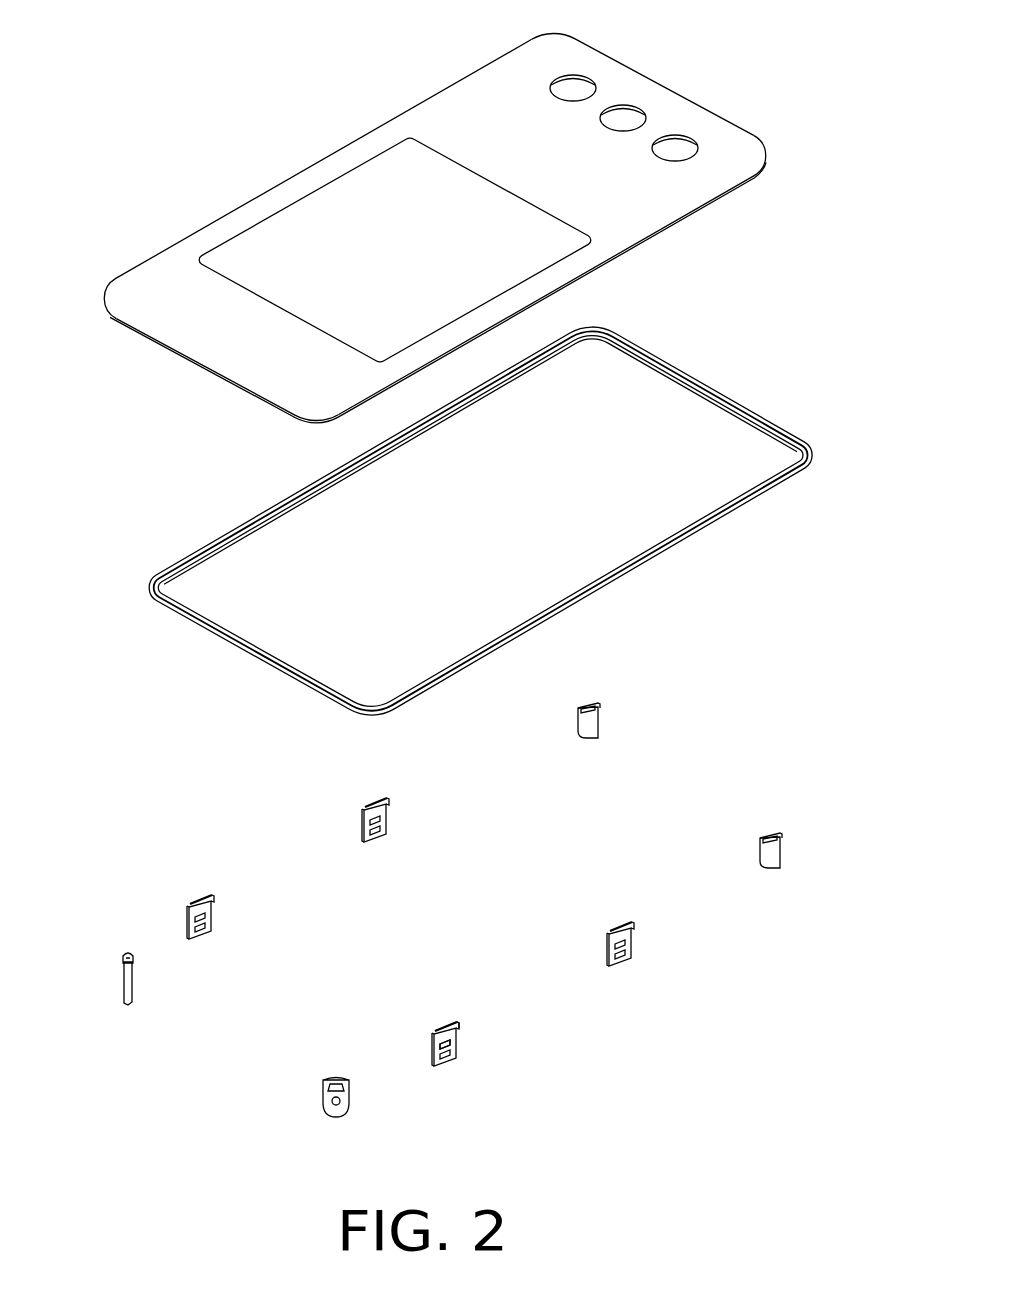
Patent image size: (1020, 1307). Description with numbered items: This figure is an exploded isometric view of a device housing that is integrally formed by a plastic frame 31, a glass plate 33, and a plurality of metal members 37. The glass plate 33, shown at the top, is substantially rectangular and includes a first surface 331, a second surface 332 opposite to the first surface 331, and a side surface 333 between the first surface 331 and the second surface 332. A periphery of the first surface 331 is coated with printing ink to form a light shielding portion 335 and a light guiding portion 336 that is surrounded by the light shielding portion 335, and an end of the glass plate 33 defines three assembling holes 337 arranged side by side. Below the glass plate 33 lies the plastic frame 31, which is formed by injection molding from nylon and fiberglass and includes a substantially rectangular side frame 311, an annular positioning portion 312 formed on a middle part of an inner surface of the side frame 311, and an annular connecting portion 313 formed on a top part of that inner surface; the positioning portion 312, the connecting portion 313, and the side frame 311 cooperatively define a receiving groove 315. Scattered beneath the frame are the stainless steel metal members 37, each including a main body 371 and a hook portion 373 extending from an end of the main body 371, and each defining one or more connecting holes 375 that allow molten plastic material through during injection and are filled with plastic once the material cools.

The glass plate 33 is at (422, 223).
The first surface 331 is at (177, 270).
The second surface 332 is at (183, 362).
The side surface 333 is at (648, 240).
The light shielding portion 335 is at (625, 88).
The light guiding portion 336 is at (370, 213).
The assembling holes 337 is at (575, 90).
The plastic frame 31 is at (450, 504).
The side frame 311 is at (770, 490).
The positioning portion 312 is at (722, 400).
The connecting portion 313 is at (637, 342).
The receiving groove 315 is at (672, 355).
The metal member 37 is at (444, 910).
The main body 371 is at (457, 1050).
The hook portion 373 is at (452, 1028).
The connecting holes 375 is at (455, 1038).